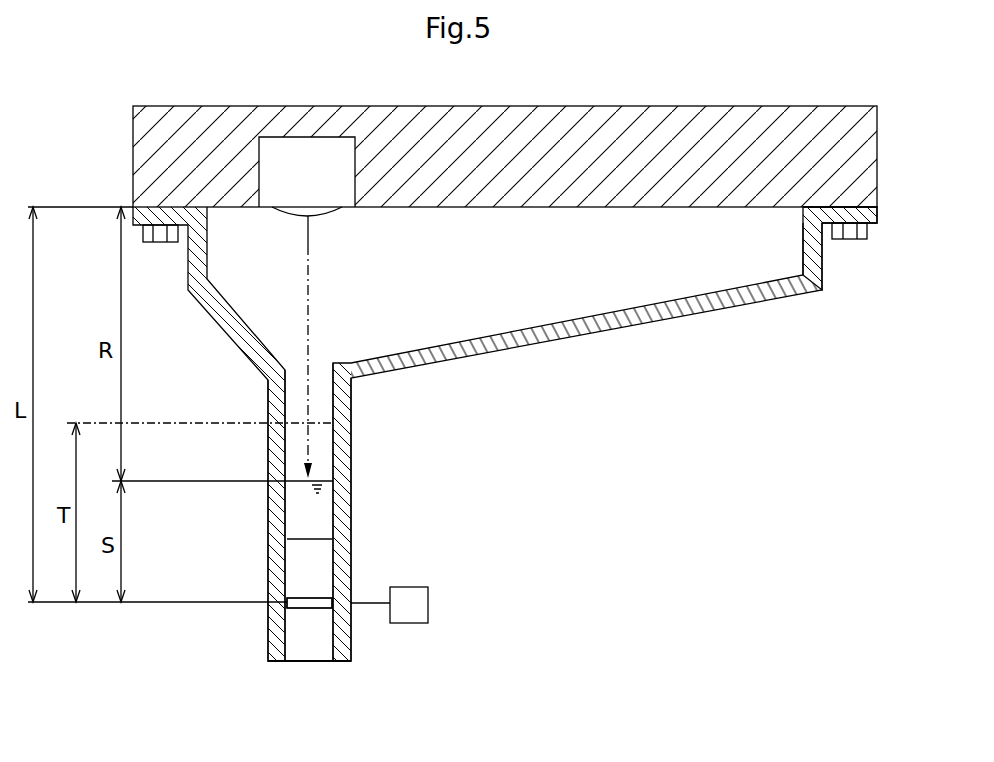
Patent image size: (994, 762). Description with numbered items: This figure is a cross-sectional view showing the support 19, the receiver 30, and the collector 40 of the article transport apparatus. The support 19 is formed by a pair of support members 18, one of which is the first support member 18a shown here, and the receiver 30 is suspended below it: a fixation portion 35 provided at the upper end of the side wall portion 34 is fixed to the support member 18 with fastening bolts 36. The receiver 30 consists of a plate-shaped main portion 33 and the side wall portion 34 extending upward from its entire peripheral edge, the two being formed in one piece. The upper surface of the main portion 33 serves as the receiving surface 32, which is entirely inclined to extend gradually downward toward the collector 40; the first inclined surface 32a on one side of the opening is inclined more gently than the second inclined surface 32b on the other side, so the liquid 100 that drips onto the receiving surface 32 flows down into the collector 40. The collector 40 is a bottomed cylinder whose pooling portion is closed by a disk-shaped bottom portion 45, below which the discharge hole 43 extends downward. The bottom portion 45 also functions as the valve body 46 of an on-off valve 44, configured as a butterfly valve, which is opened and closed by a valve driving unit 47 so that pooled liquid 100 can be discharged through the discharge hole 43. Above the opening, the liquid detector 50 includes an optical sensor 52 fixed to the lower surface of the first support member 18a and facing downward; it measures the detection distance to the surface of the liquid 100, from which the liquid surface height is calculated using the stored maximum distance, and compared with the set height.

The first support member 18a is at (750, 108).
The support member 18 is at (512, 119).
The support 19 is at (512, 119).
The receiver 30 is at (530, 440).
The receiving surface 32 is at (505, 325).
The first inclined surface 32a is at (672, 302).
The second inclined surface 32b is at (238, 317).
The main portion 33 is at (555, 345).
The side wall portion 34 is at (823, 270).
The fixation portion 35 is at (890, 214).
The fastening bolt 36 is at (158, 243).
The collector 40 is at (358, 442).
The discharge hole 43 is at (322, 665).
The on-off valve 44 is at (418, 574).
The bottom portion 45 is at (320, 600).
The valve body 46 is at (309, 603).
The valve driving unit 47 is at (428, 603).
The liquid detector 50 is at (307, 119).
The optical sensor 52 is at (315, 143).
The liquid 100 is at (309, 512).